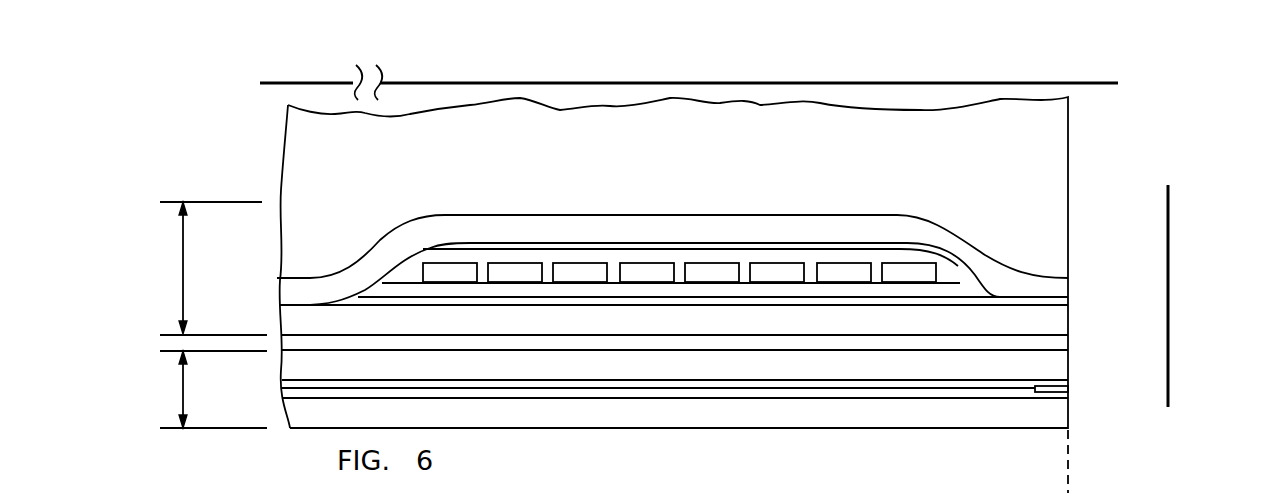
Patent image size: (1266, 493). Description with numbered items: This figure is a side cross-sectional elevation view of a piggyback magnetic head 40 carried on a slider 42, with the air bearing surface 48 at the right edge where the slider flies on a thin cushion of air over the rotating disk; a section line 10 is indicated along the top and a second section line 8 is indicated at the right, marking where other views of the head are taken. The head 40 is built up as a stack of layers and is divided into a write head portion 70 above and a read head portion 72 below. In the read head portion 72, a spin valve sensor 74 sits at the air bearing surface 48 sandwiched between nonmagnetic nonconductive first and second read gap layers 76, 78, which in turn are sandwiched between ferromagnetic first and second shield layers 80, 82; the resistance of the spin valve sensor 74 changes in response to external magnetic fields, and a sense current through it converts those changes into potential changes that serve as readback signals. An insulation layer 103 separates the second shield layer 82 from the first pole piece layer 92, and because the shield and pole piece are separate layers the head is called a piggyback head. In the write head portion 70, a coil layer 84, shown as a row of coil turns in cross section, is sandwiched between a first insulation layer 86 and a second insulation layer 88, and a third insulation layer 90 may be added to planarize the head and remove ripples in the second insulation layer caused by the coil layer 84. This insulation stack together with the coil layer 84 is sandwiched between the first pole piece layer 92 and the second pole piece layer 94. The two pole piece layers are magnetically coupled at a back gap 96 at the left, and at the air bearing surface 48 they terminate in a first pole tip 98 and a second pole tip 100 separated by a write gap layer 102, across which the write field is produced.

The section line 10- 10 is at (268, 35).
The section line 8- 8 is at (1182, 197).
The combined read and write magnetic head 40 is at (255, 108).
The slider 42 is at (1047, 130).
The air bearing surface 48 is at (1068, 451).
The write head portion 70 is at (183, 268).
The read head portion 72 is at (183, 390).
The spin valve sensor 74 is at (1068, 390).
The first read gap layer 76 is at (678, 402).
The second read gap layer 78 is at (618, 380).
The first shield layer 80 is at (793, 417).
The second shield layer 82 is at (905, 365).
The coil layer 84 is at (650, 273).
The first insulation layer 86 is at (528, 291).
The second insulation layer 88 is at (950, 275).
The third insulation layer 90 is at (450, 250).
The first pole piece layer 92 is at (972, 320).
The second pole piece layer 94 is at (826, 218).
The back gap 96 is at (303, 305).
The first pole tip 98 is at (1068, 321).
The second pole tip 100 is at (1063, 289).
The write gap layer 102 is at (1065, 302).
The insulation layer 103 is at (845, 340).